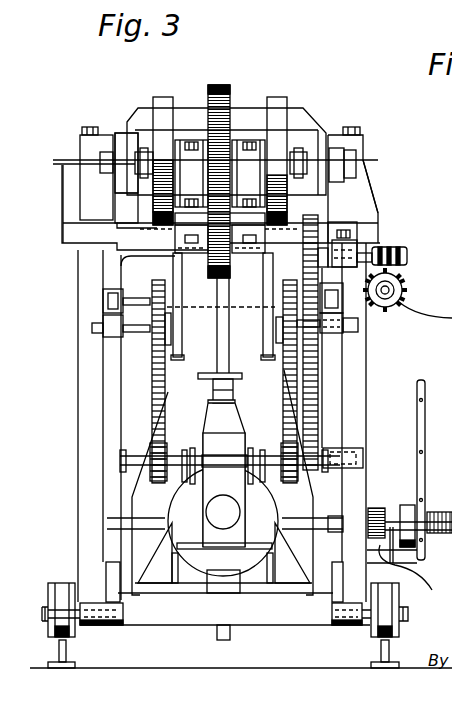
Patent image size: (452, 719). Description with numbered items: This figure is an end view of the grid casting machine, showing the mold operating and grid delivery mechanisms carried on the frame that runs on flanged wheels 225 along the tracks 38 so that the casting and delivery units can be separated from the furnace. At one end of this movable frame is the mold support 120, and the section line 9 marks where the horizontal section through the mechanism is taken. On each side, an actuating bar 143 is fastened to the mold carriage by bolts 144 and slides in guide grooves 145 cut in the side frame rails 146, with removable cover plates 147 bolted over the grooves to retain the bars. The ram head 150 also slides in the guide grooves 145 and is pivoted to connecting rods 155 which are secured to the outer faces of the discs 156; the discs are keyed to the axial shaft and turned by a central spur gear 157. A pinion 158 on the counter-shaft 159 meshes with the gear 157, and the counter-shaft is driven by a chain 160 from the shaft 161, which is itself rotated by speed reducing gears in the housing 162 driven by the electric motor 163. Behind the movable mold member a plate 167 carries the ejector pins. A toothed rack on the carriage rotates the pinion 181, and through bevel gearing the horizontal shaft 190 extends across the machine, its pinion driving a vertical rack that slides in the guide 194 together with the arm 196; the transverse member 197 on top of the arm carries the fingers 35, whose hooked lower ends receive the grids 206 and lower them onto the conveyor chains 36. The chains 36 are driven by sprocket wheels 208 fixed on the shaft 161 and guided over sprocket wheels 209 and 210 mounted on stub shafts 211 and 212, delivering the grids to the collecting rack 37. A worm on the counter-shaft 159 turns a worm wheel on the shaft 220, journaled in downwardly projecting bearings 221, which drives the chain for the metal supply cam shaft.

The mold support 120 is at (95, 147).
The removable cover plates 147 is at (88, 147).
The section line 9— 9 is at (65, 150).
The actuating bar 143 is at (63, 240).
The bolts 144 is at (135, 168).
The guide grooves 145 is at (350, 180).
The side frame members or rails 146 is at (340, 200).
The ram head 150 is at (330, 135).
The connecting rods 155 is at (300, 148).
The discs 156 is at (163, 98).
The central spur gear 157 is at (233, 85).
The pinion 158 is at (212, 290).
The counter-shaft 159 is at (369, 240).
The chain 160 is at (318, 368).
The shaft 161 is at (348, 460).
The housing 162 is at (205, 496).
The electric motor 163 is at (180, 493).
The plate 167 is at (190, 108).
The pinion 181 is at (378, 508).
The horizontal shaft 190 is at (334, 518).
The guide 194 is at (230, 385).
The arm 196 is at (415, 573).
The transverse member 197 is at (242, 303).
The grids 206 is at (297, 392).
The sprocket wheels 208 is at (168, 452).
The sprocket wheels 209 is at (160, 360).
The sprocket wheels 210 is at (166, 293).
The stub shafts 211 is at (147, 336).
The stub shafts 212 is at (148, 300).
The shaft 220 is at (388, 293).
The downwardly projecting bearings 221 is at (407, 258).
The flanged wheels 225 is at (76, 632).
The fingers 35 is at (180, 358).
The conveyor chains 36 is at (160, 395).
The collecting rack 37 is at (168, 380).
The tracks 38 is at (80, 664).